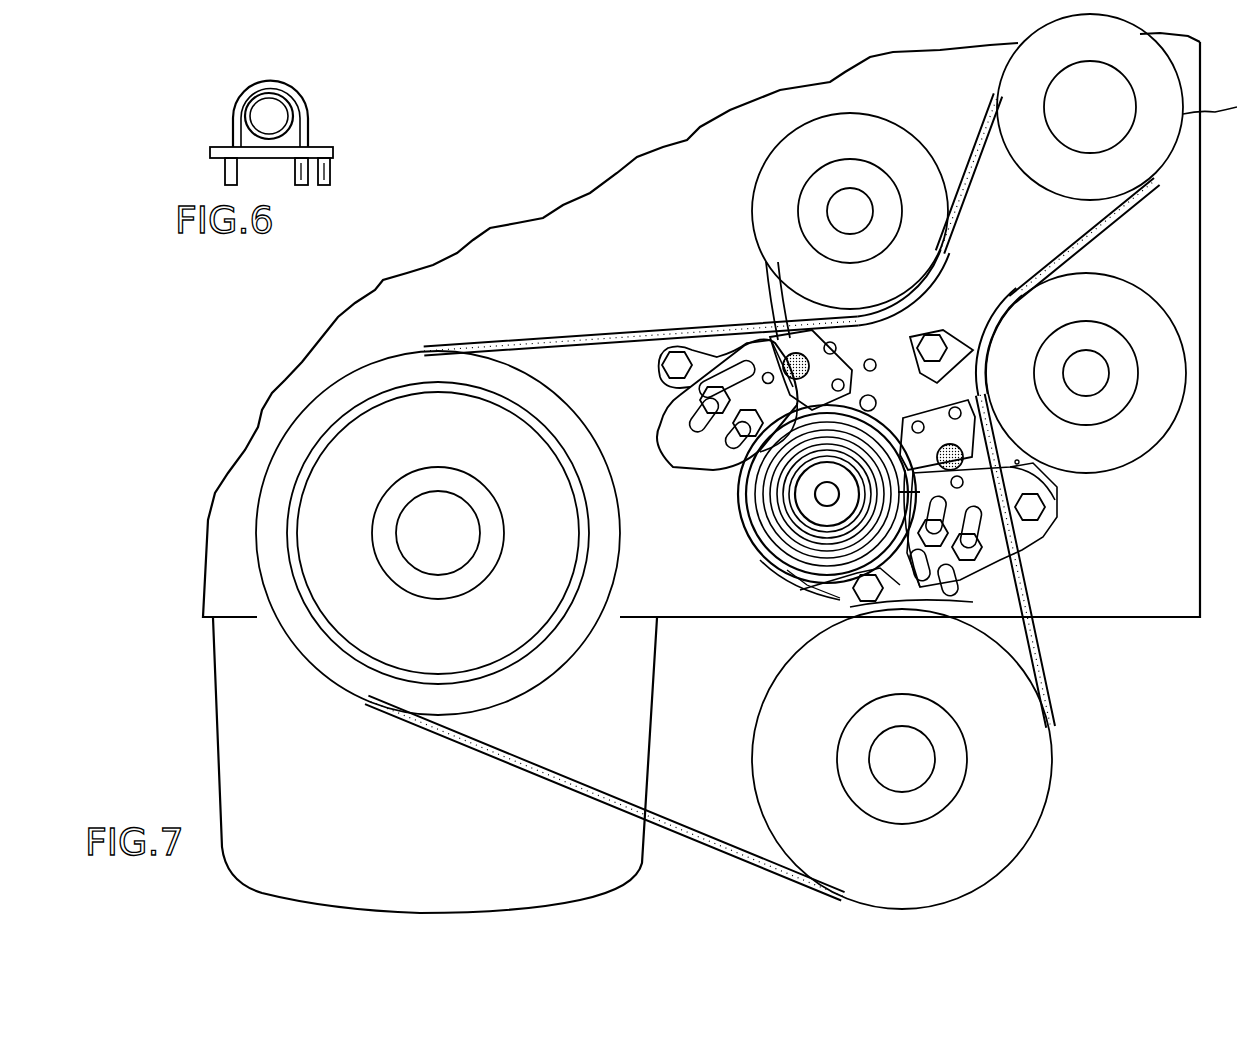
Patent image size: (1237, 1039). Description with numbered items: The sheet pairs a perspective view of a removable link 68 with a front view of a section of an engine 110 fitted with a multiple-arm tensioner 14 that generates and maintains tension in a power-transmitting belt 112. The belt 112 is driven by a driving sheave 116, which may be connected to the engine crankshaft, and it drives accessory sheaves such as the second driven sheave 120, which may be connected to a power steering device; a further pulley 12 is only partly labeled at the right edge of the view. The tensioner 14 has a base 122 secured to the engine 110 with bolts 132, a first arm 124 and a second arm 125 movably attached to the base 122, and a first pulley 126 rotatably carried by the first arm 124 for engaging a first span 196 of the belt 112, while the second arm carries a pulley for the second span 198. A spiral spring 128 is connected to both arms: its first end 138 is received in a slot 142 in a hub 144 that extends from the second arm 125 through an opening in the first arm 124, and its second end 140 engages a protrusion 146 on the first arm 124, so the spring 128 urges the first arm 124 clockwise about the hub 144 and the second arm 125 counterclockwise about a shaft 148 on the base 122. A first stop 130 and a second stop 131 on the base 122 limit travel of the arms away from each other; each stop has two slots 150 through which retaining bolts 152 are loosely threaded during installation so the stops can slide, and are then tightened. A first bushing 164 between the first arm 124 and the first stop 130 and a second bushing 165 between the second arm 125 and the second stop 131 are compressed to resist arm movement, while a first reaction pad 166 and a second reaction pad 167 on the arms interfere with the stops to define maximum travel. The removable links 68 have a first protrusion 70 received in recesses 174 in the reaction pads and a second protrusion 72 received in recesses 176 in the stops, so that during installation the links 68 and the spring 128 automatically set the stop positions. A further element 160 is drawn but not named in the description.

In FIG. 6, the removable link 68 is at (263, 84).
In FIG. 6, the first protrusion 70 is at (323, 182).
In FIG. 6, the second protrusion 72 is at (222, 170).
In FIG. 7, the engine 110 is at (195, 678).
In FIG. 7, the power-transmitting belt 112 is at (565, 783).
In FIG. 7, the driving sheave 116 is at (262, 572).
In FIG. 7, the second driven sheave 120 is at (1050, 812).
In FIG. 7, the base 122 is at (1043, 533).
In FIG. 7, the first arm 124 is at (792, 303).
In FIG. 7, the second arm 125 is at (1045, 477).
In FIG. 7, the first pulley 126 is at (745, 201).
In FIG. 7, the spring 128 is at (813, 582).
In FIG. 7, the first stop 130 is at (705, 470).
In FIG. 7, the second stop 131 is at (940, 593).
In FIG. 7, the bolts 132 is at (662, 367).
In FIG. 7, the first end of the spring 138 is at (813, 520).
In FIG. 7, the second end of the spring 140 is at (882, 398).
In FIG. 7, the slot 142 is at (805, 505).
In FIG. 7, the hub 144 is at (813, 478).
In FIG. 7, the protrusion 146 is at (866, 405).
In FIG. 7, the shaft 148 is at (820, 492).
In FIG. 7, the slot 150 is at (685, 418).
In FIG. 7, the retaining bolt 152 is at (690, 395).
In FIG. 7, the bracket 160 is at (963, 303).
In FIG. 7, the first bushing 164 is at (787, 353).
In FIG. 7, the second bushing 165 is at (967, 467).
In FIG. 7, the first reaction pad 166 is at (817, 340).
In FIG. 7, the second reaction pad 167 is at (960, 427).
In FIG. 7, the recesses 174 is at (868, 359).
In FIG. 7, the recesses 176 is at (766, 374).
In FIG. 7, the first span 196 is at (560, 335).
In FIG. 7, the second span 198 is at (1042, 640).
In FIG. 7, the tensioner 14 is at (692, 540).
In FIG. 7, the pulley 12 is at (1205, 357).